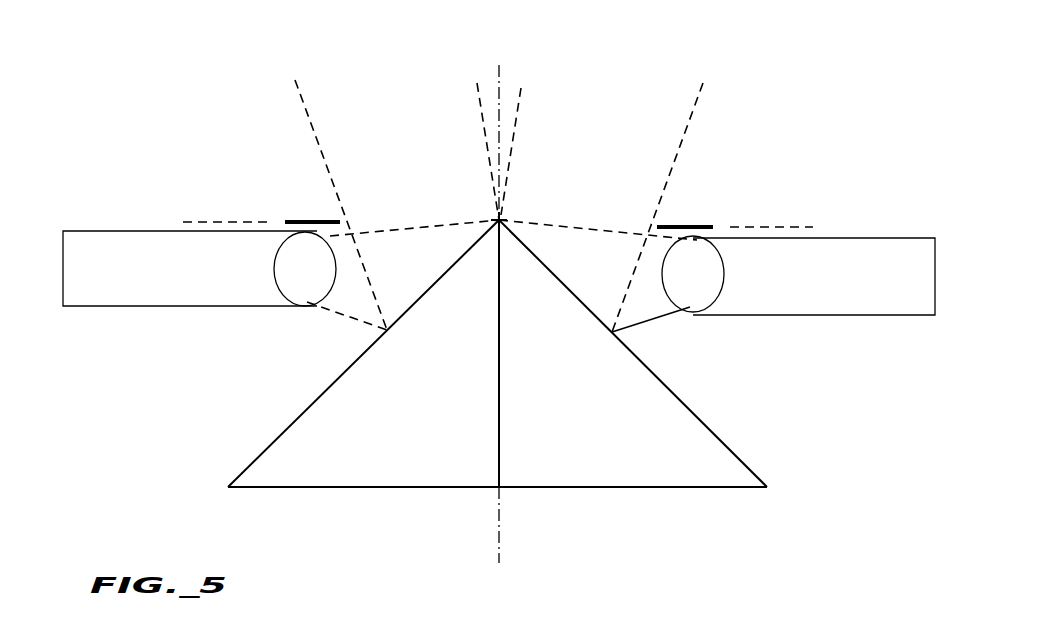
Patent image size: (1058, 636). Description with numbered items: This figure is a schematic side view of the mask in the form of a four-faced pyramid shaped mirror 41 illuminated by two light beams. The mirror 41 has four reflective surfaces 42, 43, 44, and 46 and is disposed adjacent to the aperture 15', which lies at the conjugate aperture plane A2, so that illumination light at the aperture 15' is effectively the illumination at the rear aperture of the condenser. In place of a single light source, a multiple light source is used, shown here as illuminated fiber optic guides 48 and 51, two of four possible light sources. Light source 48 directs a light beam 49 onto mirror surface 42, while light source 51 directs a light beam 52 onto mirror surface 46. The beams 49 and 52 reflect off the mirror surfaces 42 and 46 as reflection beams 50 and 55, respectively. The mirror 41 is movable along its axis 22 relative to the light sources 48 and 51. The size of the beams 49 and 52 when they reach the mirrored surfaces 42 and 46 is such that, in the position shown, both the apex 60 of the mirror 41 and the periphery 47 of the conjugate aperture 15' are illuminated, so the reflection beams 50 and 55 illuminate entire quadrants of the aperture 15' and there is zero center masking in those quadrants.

The axis 22 is at (502, 105).
The reflection beam 50 is at (677, 104).
The reflection beam 55 is at (343, 132).
The aperture 15' is at (368, 201).
The apex 60 is at (501, 218).
The periphery 47 is at (652, 224).
The light source 48 is at (848, 253).
The light source 51 is at (147, 245).
The conjugate aperture plane A2 is at (203, 222).
The light beam 52 is at (360, 303).
The light beam 49 is at (637, 303).
The mirror surface 46 is at (288, 428).
The mirror surface 42 is at (712, 430).
The pyramid shaped mirror 41 is at (643, 490).
The reflective surface 44 is at (425, 460).
The reflective surface 43 is at (585, 458).